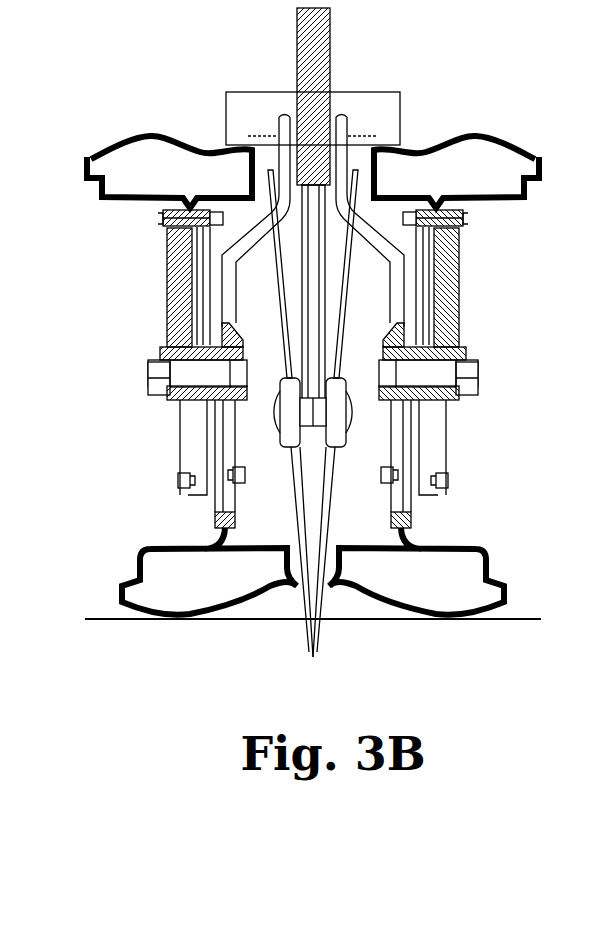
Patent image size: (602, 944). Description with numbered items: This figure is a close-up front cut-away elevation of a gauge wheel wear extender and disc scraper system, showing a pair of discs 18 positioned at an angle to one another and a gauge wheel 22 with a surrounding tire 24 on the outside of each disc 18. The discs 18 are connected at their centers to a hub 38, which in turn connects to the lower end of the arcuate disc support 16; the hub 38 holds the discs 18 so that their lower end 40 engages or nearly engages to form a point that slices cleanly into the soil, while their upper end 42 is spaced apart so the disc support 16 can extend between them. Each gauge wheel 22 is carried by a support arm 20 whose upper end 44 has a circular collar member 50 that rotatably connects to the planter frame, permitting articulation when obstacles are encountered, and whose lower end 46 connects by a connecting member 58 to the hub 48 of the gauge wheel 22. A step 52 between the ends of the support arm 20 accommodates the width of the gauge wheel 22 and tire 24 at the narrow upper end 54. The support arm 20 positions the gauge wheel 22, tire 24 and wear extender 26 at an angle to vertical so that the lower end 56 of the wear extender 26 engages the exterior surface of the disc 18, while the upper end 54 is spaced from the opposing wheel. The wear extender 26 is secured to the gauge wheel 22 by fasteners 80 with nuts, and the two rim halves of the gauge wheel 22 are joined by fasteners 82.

The disc support 16 is at (303, 290).
The discs 18 is at (286, 606).
The support arms 20 is at (283, 118).
The gauge wheel 22 is at (160, 548).
The tire 24 is at (147, 606).
The wear extender 26 is at (223, 520).
The hub 38 is at (282, 428).
The lower end of discs 40 is at (318, 662).
The upper end of discs 42 is at (246, 172).
The upper end of support arm 44 is at (288, 103).
The lower end of support arm 46 is at (287, 400).
The hub of gauge wheel 48 is at (165, 353).
The collar member 50 is at (236, 93).
The step 52 is at (168, 302).
The upper end of gauge wheel 54 is at (128, 147).
The lower end of gauge wheel 56 is at (182, 613).
The connecting member 58 is at (150, 380).
The fasteners 80 is at (160, 222).
The fasteners 82 is at (244, 476).